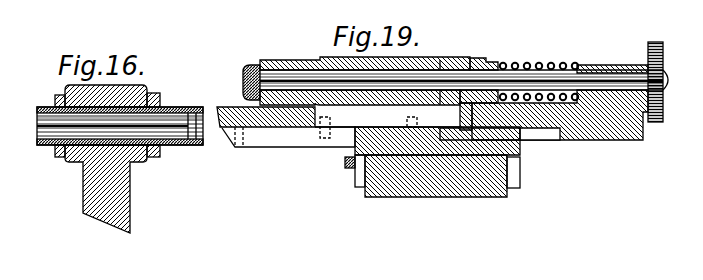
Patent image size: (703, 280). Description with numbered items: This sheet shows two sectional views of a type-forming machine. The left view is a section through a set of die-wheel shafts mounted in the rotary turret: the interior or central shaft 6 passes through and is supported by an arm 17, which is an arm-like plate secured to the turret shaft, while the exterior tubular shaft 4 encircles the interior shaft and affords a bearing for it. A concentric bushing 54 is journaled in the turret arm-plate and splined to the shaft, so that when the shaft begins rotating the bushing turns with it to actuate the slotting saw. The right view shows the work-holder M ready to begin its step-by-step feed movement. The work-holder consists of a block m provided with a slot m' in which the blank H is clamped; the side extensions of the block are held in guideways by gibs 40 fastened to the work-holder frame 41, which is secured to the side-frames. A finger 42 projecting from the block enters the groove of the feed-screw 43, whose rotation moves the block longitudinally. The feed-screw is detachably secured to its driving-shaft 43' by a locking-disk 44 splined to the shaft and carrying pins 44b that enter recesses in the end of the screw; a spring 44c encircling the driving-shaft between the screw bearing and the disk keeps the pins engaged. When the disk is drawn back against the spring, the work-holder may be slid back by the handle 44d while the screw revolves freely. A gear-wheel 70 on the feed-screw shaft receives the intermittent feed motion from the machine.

In FIG. 16, the tubular shaft 4 is at (170, 107).
In FIG. 16, the interior shaft 6 is at (38, 128).
In FIG. 16, the arm 17 is at (128, 197).
In FIG. 16, the bushing 54 is at (162, 161).
In FIG. 19, the gib 40 is at (298, 143).
In FIG. 19, the work-holder frame 41 is at (580, 138).
In FIG. 19, the finger 42 is at (460, 117).
In FIG. 19, the feed-screw 43 is at (359, 68).
In FIG. 19, the driving-shaft 43' is at (461, 62).
In FIG. 19, the locking-disk 44 is at (486, 64).
In FIG. 19, the pin 44b is at (398, 107).
In FIG. 19, the spring 44c is at (538, 64).
In FIG. 19, the handle 44d is at (350, 170).
In FIG. 19, the gear-wheel 70 is at (657, 42).
In FIG. 19, the blank H is at (440, 197).
In FIG. 19, the work-holder M is at (313, 175).
In FIG. 19, the block m is at (349, 190).
In FIG. 19, the slot m' is at (530, 172).